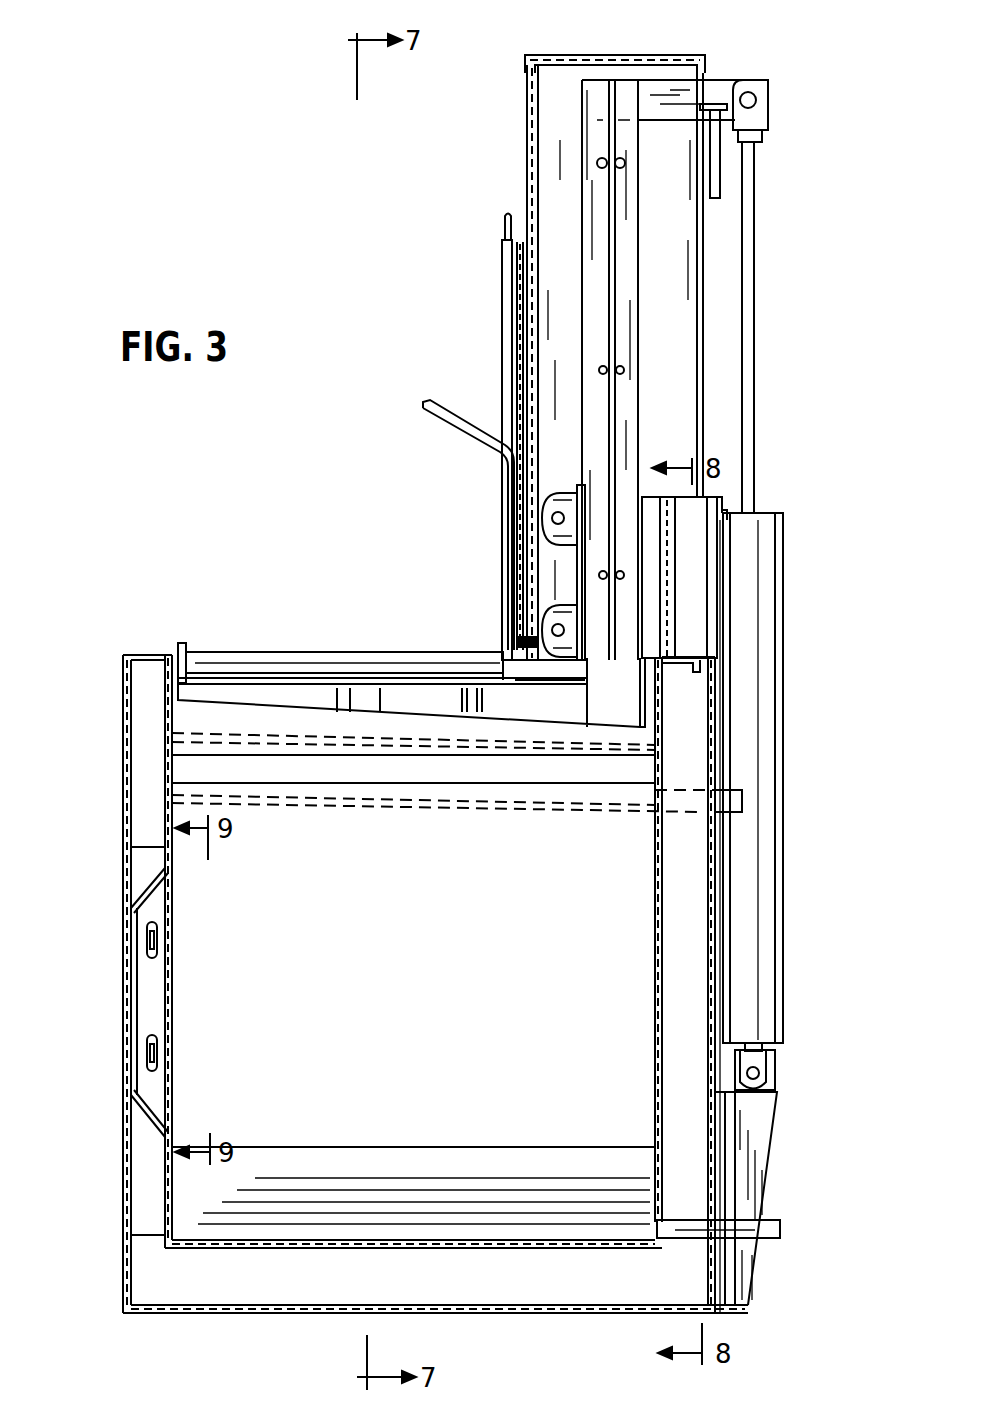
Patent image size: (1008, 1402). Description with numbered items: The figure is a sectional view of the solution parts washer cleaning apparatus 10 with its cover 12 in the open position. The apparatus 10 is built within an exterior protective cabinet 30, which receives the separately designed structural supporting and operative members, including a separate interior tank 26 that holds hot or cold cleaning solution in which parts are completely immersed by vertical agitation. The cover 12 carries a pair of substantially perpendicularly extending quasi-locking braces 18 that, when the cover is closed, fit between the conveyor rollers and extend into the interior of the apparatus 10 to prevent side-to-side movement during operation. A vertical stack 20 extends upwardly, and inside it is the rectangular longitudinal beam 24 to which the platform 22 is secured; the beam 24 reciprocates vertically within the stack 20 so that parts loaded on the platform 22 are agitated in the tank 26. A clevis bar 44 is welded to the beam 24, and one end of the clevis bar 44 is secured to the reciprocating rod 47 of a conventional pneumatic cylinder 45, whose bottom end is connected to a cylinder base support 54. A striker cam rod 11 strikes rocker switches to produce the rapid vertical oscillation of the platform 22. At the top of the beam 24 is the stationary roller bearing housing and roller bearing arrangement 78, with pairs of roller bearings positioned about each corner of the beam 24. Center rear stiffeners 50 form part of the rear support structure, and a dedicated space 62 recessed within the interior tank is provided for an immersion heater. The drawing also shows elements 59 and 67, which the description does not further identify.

The solution parts washer cleaning apparatus 10 is at (327, 250).
The striker cam rod 11 is at (718, 152).
The cover 12 is at (505, 325).
The quasi-locking braces 18 is at (455, 423).
The vertical stack 20 is at (672, 64).
The platform 22 is at (265, 662).
The longitudinal beam 24 is at (627, 262).
The interior tank 26 is at (248, 962).
The exterior protective cabinet 30 is at (126, 737).
The clevis bar 44 is at (718, 95).
The pneumatic cylinder 45 is at (763, 737).
The reciprocating rod 47 is at (754, 407).
The center rear stiffeners 50 is at (715, 853).
The cylinder base support 54 is at (752, 1127).
The tank side wall 59 is at (665, 985).
The dedicated space 62 is at (170, 847).
The tank bottom 67 is at (515, 1250).
The roller bearing housing and roller bearing arrangement 78 is at (578, 573).